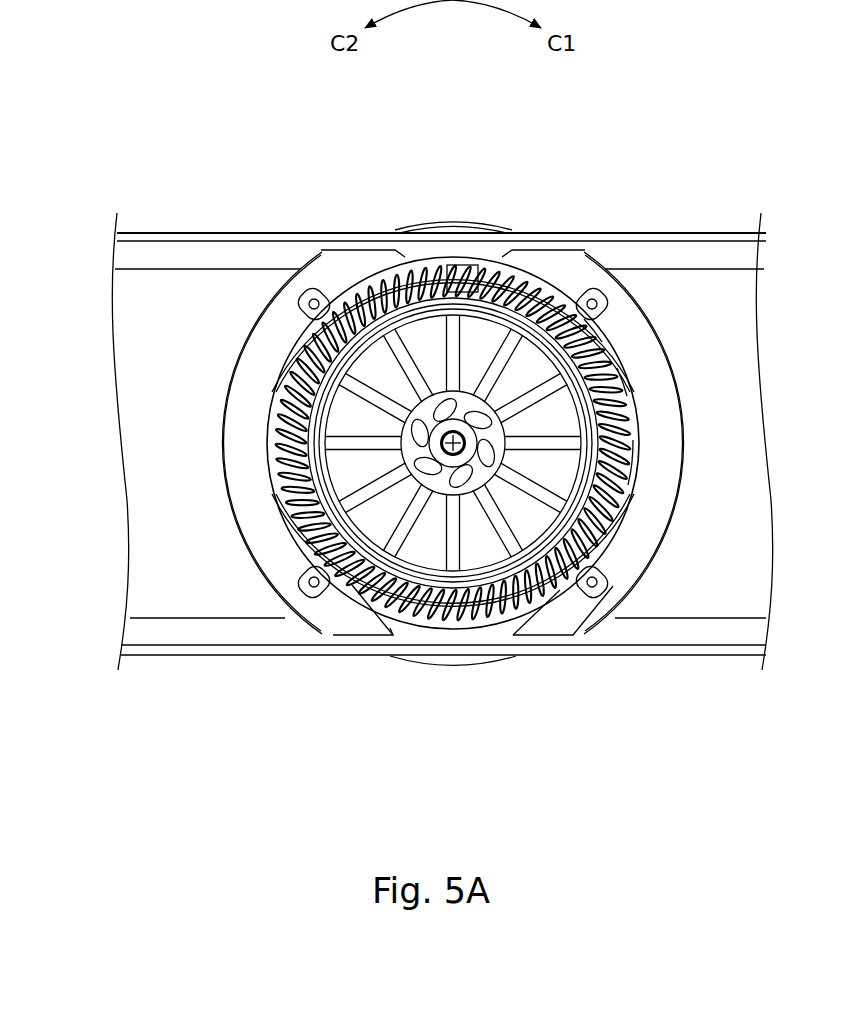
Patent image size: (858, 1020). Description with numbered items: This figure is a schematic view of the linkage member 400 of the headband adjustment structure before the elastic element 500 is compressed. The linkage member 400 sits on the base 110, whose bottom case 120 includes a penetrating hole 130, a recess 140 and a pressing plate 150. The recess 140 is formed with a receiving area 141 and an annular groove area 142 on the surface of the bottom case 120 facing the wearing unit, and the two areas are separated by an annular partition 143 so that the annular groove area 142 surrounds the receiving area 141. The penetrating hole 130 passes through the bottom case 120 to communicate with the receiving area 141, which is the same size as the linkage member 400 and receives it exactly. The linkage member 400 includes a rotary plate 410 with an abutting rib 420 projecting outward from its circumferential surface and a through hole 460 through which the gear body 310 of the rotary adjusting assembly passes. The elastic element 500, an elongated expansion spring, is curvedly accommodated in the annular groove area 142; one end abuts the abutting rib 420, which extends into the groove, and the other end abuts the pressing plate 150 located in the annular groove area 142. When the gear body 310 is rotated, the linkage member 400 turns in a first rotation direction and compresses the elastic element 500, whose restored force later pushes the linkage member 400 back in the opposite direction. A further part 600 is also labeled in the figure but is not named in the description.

The base 110 is at (740, 227).
The bottom case 120 is at (553, 347).
The penetrating hole 130 is at (468, 398).
The recess 140 is at (553, 369).
The receiving area 141 is at (632, 440).
The annular groove area 142 is at (582, 312).
The annular partition 143 is at (586, 386).
The pressing plate 150 is at (448, 290).
The gear body 310 is at (428, 470).
The linkage member 400 is at (410, 353).
The rotary plate 410 is at (373, 370).
The abutting rib 420 is at (455, 282).
The through hole 460 is at (399, 450).
The elastic element 500 is at (630, 456).
The cover 600 is at (415, 222).